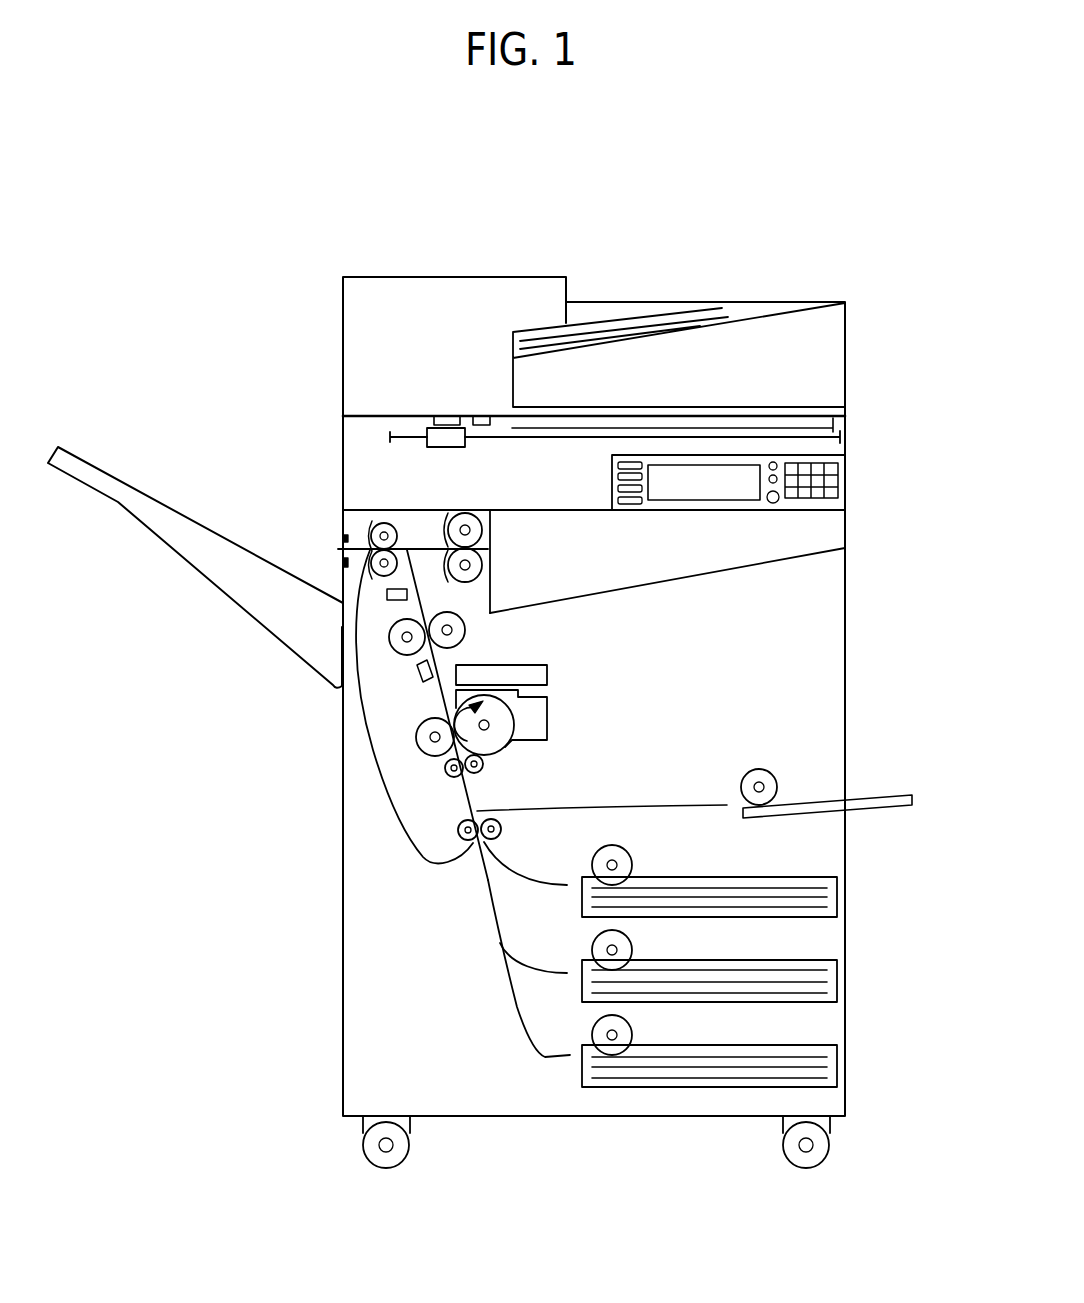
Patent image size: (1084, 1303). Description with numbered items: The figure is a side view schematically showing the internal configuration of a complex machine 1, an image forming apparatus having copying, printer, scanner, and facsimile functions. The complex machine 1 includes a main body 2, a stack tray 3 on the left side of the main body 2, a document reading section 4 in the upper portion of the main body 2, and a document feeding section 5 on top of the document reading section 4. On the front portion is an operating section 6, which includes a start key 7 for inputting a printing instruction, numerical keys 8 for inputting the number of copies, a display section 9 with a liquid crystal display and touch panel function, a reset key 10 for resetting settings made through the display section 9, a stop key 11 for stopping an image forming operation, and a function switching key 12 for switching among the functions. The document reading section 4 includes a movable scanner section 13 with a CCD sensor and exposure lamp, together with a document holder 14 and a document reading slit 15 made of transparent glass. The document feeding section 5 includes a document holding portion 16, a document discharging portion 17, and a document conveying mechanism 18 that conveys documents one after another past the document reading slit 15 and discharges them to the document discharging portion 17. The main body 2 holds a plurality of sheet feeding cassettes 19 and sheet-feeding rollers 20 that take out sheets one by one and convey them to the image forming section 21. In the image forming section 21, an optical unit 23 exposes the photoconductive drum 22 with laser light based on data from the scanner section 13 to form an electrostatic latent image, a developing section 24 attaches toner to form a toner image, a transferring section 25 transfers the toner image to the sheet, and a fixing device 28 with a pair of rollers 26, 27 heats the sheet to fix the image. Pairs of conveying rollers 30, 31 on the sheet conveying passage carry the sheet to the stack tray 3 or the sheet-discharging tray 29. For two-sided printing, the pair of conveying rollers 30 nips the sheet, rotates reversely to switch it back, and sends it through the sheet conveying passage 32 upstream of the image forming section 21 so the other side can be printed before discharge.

The complex machine 1 is at (139, 275).
The main body 2 is at (802, 706).
The stack tray 3 is at (246, 624).
The document reading section 4 is at (365, 449).
The document feeding section 5 is at (633, 298).
The operating section 6 is at (860, 485).
The start key 7 is at (770, 503).
The numerical keys 8 is at (790, 500).
The display section 9 is at (678, 487).
The reset key 10 is at (774, 462).
The stop key 11 is at (771, 475).
The function switching key 12 is at (615, 492).
The scanner section 13 is at (445, 448).
The document holder 14 is at (833, 421).
The document reading slit 15 is at (437, 416).
The document holding portion 16 is at (752, 308).
The document discharging portion 17 is at (770, 405).
The document conveying mechanism 18 is at (442, 365).
The sheet feeding cassettes 19 is at (833, 902).
The sheet-feeding rollers 20 is at (628, 865).
The image forming section 21 is at (360, 802).
The photoconductive drum 22 is at (497, 745).
The optical unit 23 is at (547, 675).
The developing section 24 is at (547, 717).
The transferring section 25 is at (428, 747).
The roller 26 is at (405, 618).
The roller 27 is at (470, 632).
The fixing device 28 is at (573, 610).
The sheet-discharging tray 29 is at (665, 585).
The pair of conveying rollers 30 is at (432, 545).
The pair of conveying rollers 31 is at (372, 542).
The sheet conveying passage 32 is at (396, 721).